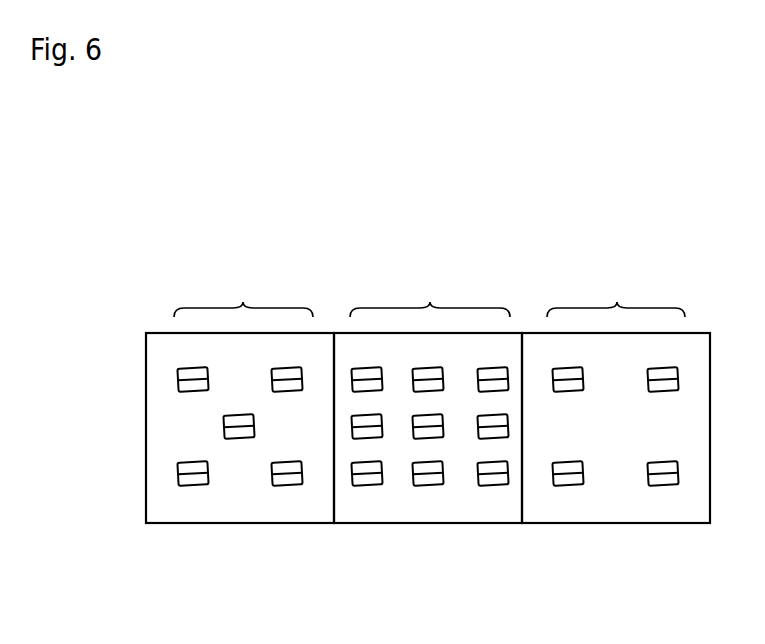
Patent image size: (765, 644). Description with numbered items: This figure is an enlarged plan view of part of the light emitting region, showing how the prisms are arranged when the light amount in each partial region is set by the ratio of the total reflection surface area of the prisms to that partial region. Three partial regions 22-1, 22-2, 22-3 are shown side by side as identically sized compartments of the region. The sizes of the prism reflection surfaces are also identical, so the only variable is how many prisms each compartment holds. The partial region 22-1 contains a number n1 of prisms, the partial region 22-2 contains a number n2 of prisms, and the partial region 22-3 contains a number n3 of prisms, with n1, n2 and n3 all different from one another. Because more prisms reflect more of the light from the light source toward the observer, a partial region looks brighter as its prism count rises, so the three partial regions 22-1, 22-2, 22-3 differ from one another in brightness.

The partial region 22-1 is at (250, 523).
The partial region 22-2 is at (430, 523).
The partial region 22-3 is at (620, 523).
The number of prisms in partial region 22-1 n1 is at (243, 293).
The number of prisms in partial region 22-2 n2 is at (430, 293).
The number of prisms in partial region 22-3 n3 is at (616, 293).